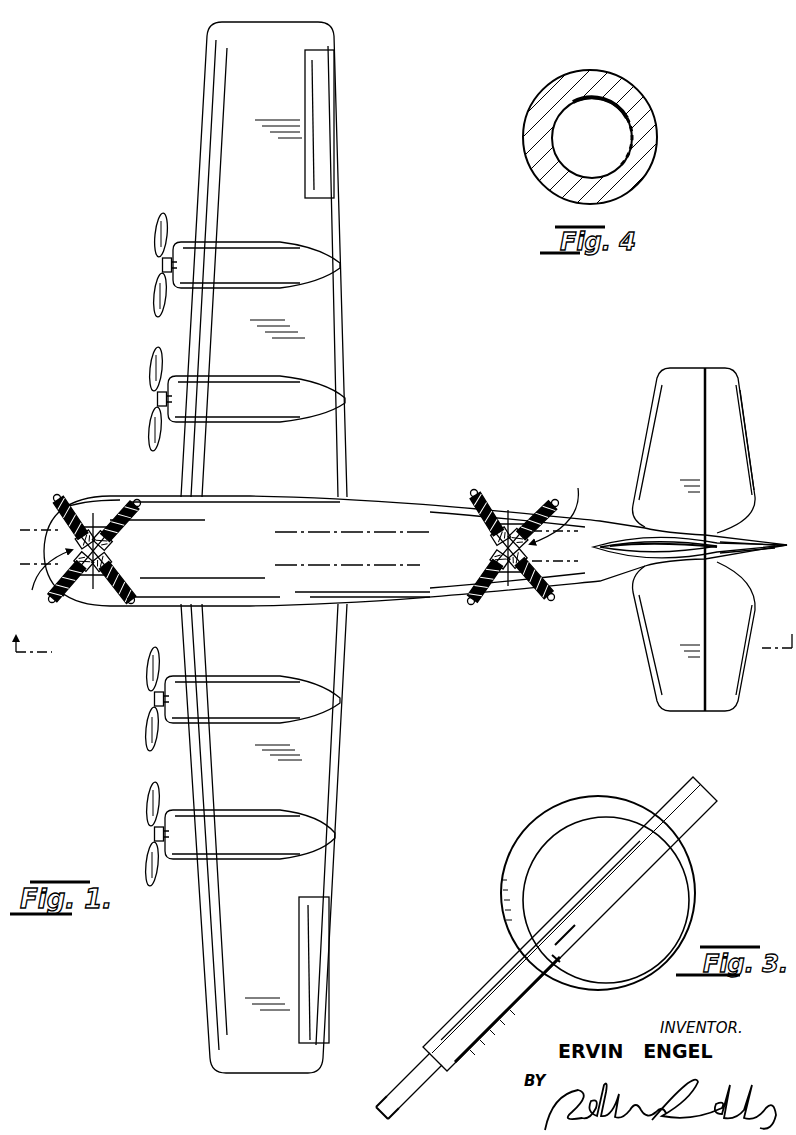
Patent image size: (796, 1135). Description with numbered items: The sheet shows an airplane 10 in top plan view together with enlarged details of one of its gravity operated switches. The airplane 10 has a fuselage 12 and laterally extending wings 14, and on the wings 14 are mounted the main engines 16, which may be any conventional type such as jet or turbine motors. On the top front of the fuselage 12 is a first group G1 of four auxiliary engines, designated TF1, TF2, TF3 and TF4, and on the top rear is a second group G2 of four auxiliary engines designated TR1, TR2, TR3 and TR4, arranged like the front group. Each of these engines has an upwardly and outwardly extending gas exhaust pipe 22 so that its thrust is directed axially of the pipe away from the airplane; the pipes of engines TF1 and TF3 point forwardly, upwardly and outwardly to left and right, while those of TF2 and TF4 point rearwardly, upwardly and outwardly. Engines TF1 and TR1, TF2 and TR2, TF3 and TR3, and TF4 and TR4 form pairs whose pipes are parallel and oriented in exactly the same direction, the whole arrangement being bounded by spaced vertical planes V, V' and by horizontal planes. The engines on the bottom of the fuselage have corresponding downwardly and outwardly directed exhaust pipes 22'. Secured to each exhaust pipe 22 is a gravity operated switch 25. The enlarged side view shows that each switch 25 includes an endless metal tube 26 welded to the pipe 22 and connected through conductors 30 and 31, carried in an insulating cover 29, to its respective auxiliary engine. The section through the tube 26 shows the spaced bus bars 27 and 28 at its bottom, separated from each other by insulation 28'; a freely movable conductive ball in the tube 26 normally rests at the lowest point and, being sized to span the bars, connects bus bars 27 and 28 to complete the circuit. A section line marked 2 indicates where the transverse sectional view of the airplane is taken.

In FIG. 1, the airplane 10 is at (398, 602).
In FIG. 1, the fuselage 12 is at (411, 523).
In FIG. 1, the wings 14 is at (304, 141).
In FIG. 1, the engines 16 is at (183, 245).
In FIG. 1, the gas exhaust pipe 22 is at (320, 537).
In FIG. 3, the gas exhaust pipe 22 is at (567, 924).
In FIG. 1, the exhaust pipe 22' is at (61, 612).
In FIG. 1, the gravity operated switch 25 is at (54, 508).
In FIG. 3, the gravity operated switch 25 is at (497, 878).
In FIG. 4, the endless metal tube 26 is at (652, 177).
In FIG. 3, the endless metal tube 26 is at (690, 860).
In FIG. 4, the bus bar 27 is at (605, 98).
In FIG. 4, the bus bar 28 is at (600, 126).
In FIG. 4, the insulation 28' is at (655, 125).
In FIG. 3, the insulating cover 29 is at (563, 958).
In FIG. 3, the conductor 30 is at (388, 1098).
In FIG. 3, the conductor 31 is at (398, 1106).
In FIG. 1, the auxiliary engine TF1 is at (92, 582).
In FIG. 1, the auxiliary engine TF2 is at (105, 577).
In FIG. 1, the auxiliary engine TF3 is at (88, 530).
In FIG. 1, the auxiliary engine TF4 is at (102, 532).
In FIG. 1, the auxiliary engine TR1 is at (496, 575).
In FIG. 1, the auxiliary engine TR2 is at (513, 576).
In FIG. 1, the auxiliary engine TR3 is at (500, 528).
In FIG. 1, the auxiliary engine TR4 is at (513, 528).
In FIG. 1, the first group of auxiliary engines G1 is at (38, 575).
In FIG. 1, the second group of auxiliary engines G2 is at (561, 507).
In FIG. 1, the vertical plane V is at (297, 562).
In FIG. 1, the vertical plane V' is at (298, 530).
In FIG. 1, the section line 2 is at (404, 655).